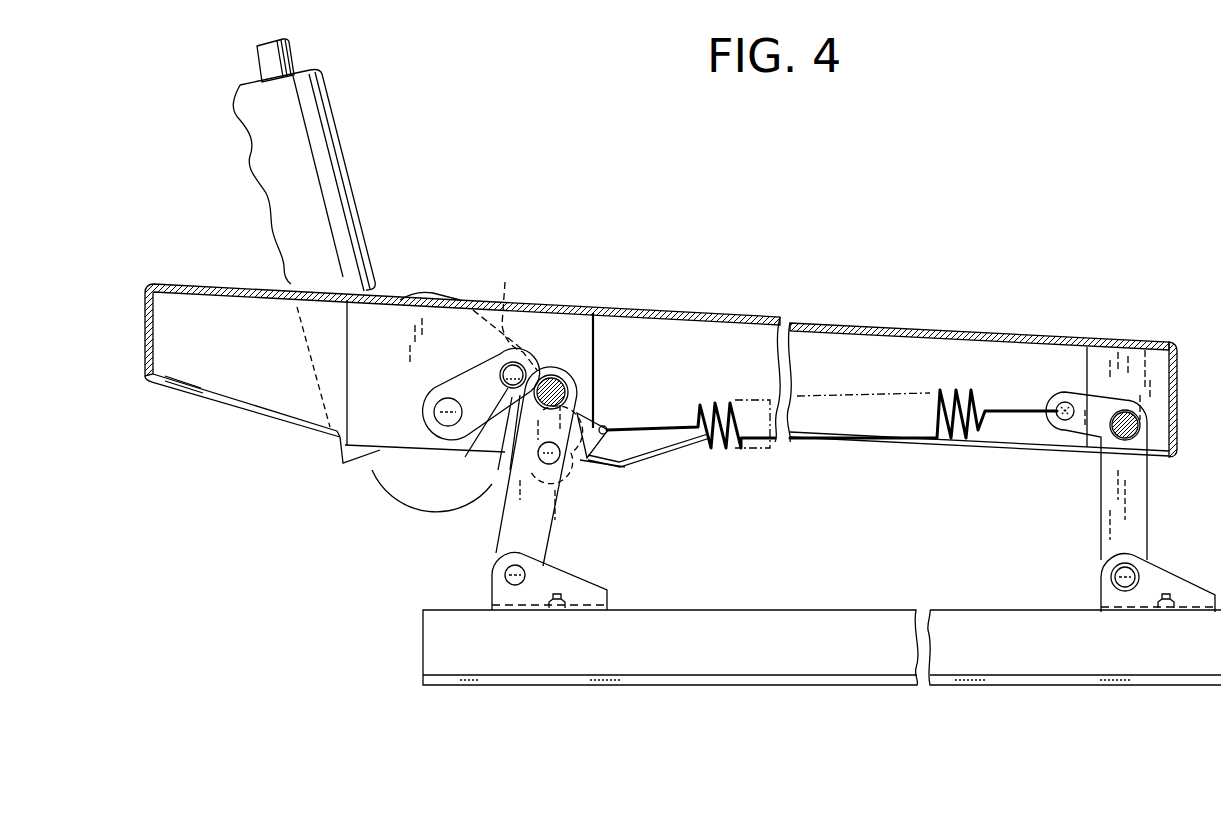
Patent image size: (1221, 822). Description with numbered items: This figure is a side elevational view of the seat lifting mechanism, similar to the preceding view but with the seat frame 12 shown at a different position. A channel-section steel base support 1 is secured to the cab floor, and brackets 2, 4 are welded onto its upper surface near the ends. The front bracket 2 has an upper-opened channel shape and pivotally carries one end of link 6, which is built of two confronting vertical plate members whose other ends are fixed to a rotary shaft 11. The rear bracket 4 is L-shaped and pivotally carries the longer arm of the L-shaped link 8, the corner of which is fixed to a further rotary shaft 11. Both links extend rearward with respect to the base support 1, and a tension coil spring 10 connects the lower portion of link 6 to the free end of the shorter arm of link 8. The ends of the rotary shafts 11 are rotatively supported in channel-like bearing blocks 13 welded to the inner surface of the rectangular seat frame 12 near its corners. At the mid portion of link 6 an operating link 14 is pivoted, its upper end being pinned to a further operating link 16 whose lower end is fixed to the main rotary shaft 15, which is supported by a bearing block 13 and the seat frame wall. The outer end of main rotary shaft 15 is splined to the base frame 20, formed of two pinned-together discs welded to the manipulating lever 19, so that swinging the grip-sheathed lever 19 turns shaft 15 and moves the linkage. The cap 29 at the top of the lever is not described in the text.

The base support 1 is at (854, 630).
The bracket 2 is at (580, 588).
The bracket 4 is at (1190, 592).
The link 6 is at (547, 516).
The link 8 is at (1145, 498).
The tension coil spring 10 is at (725, 452).
The rotary shaft 11 is at (562, 388).
The seat frame 12 is at (834, 324).
The bearing block 13 is at (578, 326).
The operating link 14 is at (495, 458).
The main rotary shaft 15 is at (448, 400).
The operating link 16 is at (490, 418).
The manipulating lever 19 is at (320, 126).
The base frame 20 is at (505, 311).
The handle cap 29 is at (287, 52).